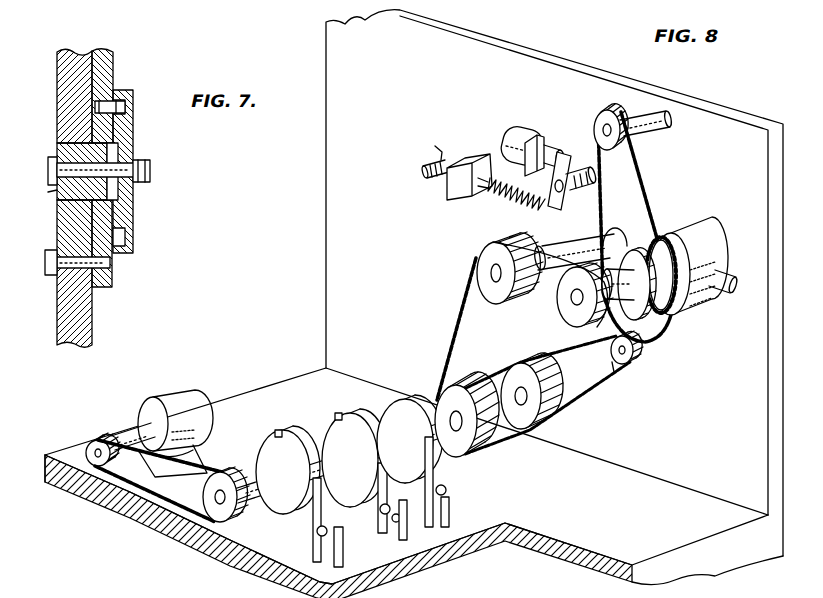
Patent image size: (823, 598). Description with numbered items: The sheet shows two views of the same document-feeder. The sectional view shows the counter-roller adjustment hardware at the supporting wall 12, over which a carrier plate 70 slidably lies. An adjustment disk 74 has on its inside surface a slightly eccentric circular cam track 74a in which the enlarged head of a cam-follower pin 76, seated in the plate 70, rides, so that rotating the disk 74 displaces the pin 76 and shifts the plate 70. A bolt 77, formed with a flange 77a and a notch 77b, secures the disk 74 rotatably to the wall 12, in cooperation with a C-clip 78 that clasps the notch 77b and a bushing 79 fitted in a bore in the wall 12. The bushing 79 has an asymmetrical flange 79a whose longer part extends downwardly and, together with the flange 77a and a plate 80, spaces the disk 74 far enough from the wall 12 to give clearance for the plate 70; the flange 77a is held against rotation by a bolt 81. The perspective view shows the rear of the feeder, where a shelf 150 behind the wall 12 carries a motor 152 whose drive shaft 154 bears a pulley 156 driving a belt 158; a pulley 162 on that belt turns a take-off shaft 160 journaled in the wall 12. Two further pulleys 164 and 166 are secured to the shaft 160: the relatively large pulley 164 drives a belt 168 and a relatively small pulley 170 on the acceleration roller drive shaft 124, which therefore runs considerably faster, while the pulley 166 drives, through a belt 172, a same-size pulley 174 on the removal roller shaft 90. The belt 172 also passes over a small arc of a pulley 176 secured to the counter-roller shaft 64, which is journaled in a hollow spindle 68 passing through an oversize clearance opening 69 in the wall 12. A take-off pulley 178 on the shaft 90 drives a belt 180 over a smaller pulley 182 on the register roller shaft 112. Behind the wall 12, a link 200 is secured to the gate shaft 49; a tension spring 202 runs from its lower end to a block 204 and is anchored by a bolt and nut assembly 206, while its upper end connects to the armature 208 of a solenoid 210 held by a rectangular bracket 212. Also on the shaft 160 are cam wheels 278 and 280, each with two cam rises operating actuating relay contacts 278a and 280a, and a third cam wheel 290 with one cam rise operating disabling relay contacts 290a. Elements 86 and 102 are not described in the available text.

In FIG. 7, the supporting wall 12 is at (57, 88).
In FIG. 8, the supporting wall 12 is at (752, 396).
In FIG. 7, the carrier plate 70 is at (113, 75).
In FIG. 7, the adjustment disk 74 is at (133, 133).
In FIG. 7, the circular cam track 74a is at (125, 240).
In FIG. 7, the cam-follower pin 76 is at (125, 107).
In FIG. 7, the bolt 77 is at (150, 175).
In FIG. 7, the flange 77a is at (118, 160).
In FIG. 7, the notch 77b is at (48, 172).
In FIG. 7, the C-clip 78 is at (55, 195).
In FIG. 7, the bushing 79 is at (62, 143).
In FIG. 7, the asymmetrical flange 79a is at (75, 240).
In FIG. 7, the plate 80 is at (112, 282).
In FIG. 7, the bolt 81 is at (50, 275).
In FIG. 8, the shelf 150 is at (674, 537).
In FIG. 8, the motor 152 is at (184, 397).
In FIG. 8, the drive shaft 154 is at (130, 430).
In FIG. 8, the pulley 156 is at (94, 441).
In FIG. 8, the belt 158 is at (160, 508).
In FIG. 8, the take-off shaft 160 is at (312, 440).
In FIG. 8, the pulley 162 is at (220, 518).
In FIG. 8, the pulley 164 is at (552, 420).
In FIG. 8, the pulley 166 is at (480, 450).
In FIG. 8, the belt 168 is at (590, 396).
In FIG. 8, the pulley 170 is at (640, 350).
In FIG. 8, the belt 172 is at (452, 338).
In FIG. 8, the pulley 174 is at (567, 322).
In FIG. 8, the pulley 176 is at (476, 262).
In FIG. 8, the take-off pulley 178 is at (660, 240).
In FIG. 8, the belt 180 is at (648, 188).
In FIG. 8, the pulley 182 is at (600, 118).
In FIG. 8, the register roller shaft 112 is at (668, 123).
In FIG. 8, the acceleration roller drive shaft 124 is at (616, 368).
In FIG. 8, the motor 86 is at (712, 236).
In FIG. 8, the removal roller shaft 90 is at (640, 312).
In FIG. 8, the shaft 102 is at (733, 280).
In FIG. 8, the rotatable shaft 64 is at (558, 300).
In FIG. 8, the hollow spindle 68 is at (572, 241).
In FIG. 8, the clearance opening 69 is at (614, 232).
In FIG. 8, the shaft 49 is at (582, 186).
In FIG. 8, the link 200 is at (560, 206).
In FIG. 8, the tension spring 202 is at (524, 202).
In FIG. 8, the block 204 is at (460, 190).
In FIG. 8, the bolt and nut assembly 206 is at (441, 161).
In FIG. 8, the armature 208 is at (562, 148).
In FIG. 8, the solenoid 210 is at (505, 136).
In FIG. 8, the rectangular bracket 212 is at (535, 136).
In FIG. 8, the cam wheel 278 is at (268, 444).
In FIG. 8, the actuating relay contacts 278a is at (344, 542).
In FIG. 8, the cam wheel 280 is at (340, 413).
In FIG. 8, the actuating relay contacts 280a is at (407, 545).
In FIG. 8, the cam wheel 290 is at (434, 456).
In FIG. 8, the alternate feed disabling relay contacts 290a is at (450, 509).